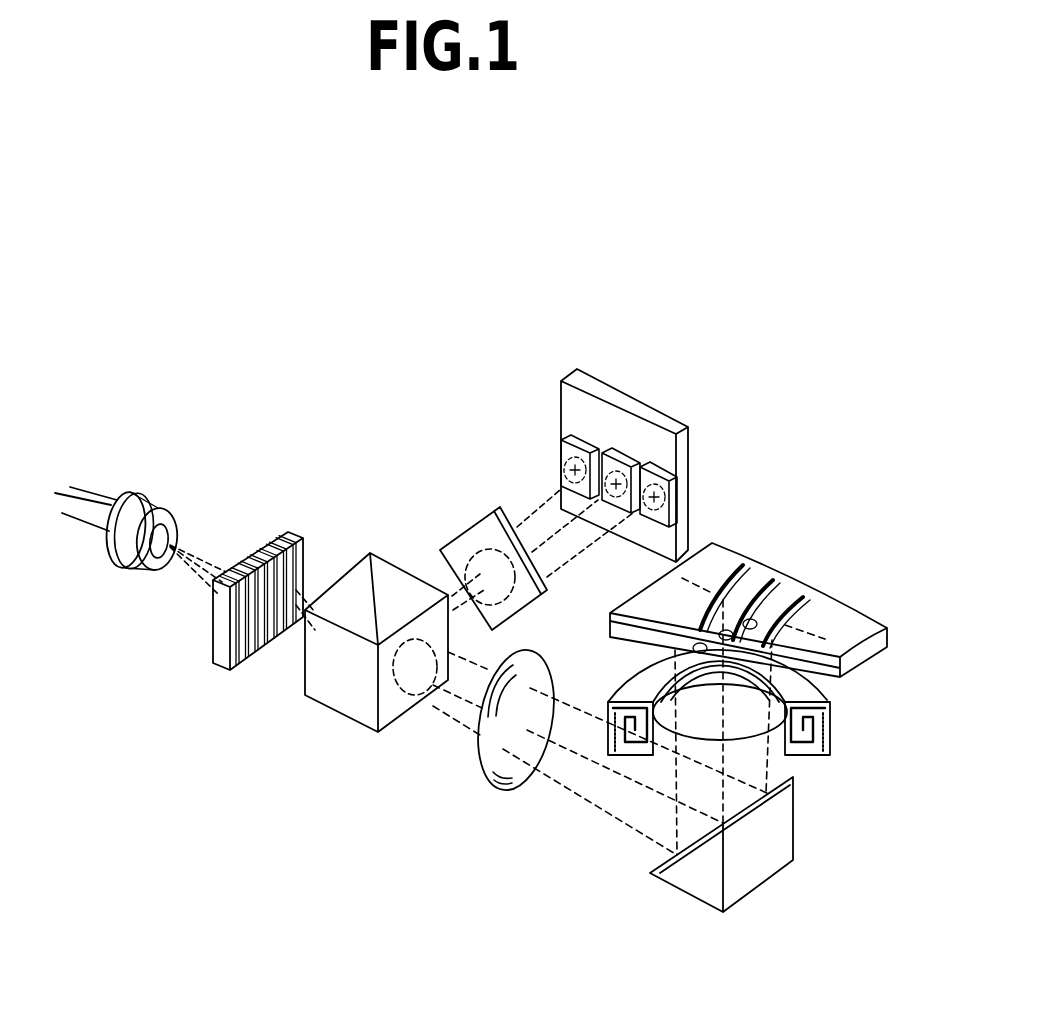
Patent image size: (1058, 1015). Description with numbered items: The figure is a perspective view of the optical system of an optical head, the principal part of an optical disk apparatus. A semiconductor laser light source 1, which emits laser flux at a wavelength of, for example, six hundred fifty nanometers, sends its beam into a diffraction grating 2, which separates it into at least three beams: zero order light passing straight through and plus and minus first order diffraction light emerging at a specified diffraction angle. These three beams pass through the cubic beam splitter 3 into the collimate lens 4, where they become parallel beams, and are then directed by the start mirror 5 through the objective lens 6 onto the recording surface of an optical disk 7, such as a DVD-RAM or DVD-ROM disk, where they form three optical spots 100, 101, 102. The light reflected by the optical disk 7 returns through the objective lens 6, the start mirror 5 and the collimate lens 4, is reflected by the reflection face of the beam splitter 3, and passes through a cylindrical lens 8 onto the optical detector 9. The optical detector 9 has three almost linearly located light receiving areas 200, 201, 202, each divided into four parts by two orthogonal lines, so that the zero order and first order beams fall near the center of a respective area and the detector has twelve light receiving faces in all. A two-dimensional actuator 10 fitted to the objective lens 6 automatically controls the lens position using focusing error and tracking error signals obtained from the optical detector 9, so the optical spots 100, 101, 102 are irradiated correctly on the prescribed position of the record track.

The semiconductor laser light source 1 is at (112, 553).
The diffraction grating 2 is at (215, 663).
The cubic beam splitter 3 is at (305, 697).
The collimate lens 4 is at (494, 786).
The start mirror 5 is at (667, 873).
The objective lens 6 is at (735, 700).
The optical disk 7 is at (732, 587).
The cylindrical lens 8 is at (447, 549).
The optical detector 9 is at (630, 441).
The two-dimensional actuator 10 is at (830, 728).
The optical spot 100 is at (747, 592).
The optical spot 101 is at (797, 598).
The optical spot 102 is at (668, 624).
The light receiving area 200 is at (617, 450).
The light receiving area 201 is at (673, 490).
The light receiving area 202 is at (560, 452).